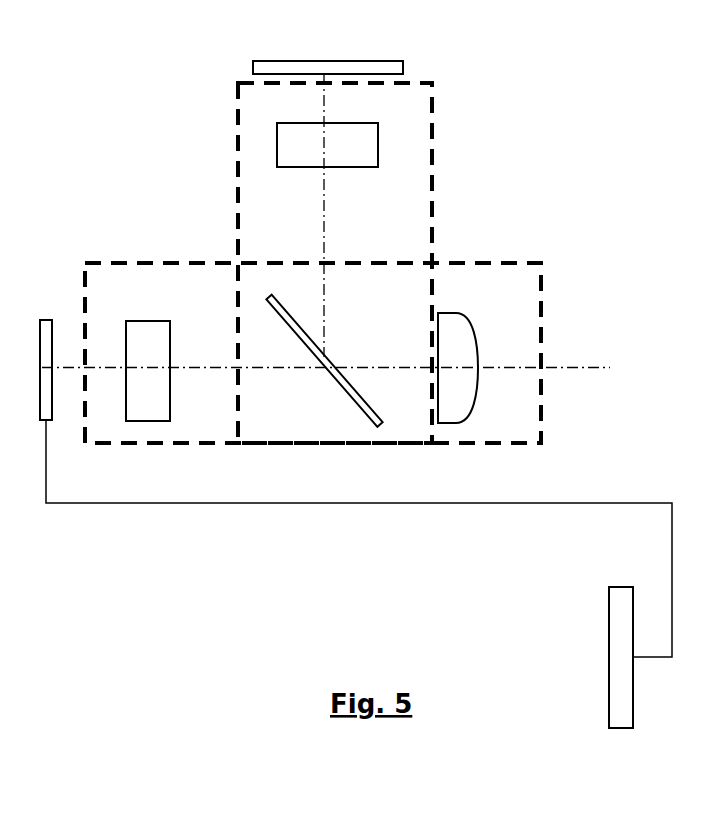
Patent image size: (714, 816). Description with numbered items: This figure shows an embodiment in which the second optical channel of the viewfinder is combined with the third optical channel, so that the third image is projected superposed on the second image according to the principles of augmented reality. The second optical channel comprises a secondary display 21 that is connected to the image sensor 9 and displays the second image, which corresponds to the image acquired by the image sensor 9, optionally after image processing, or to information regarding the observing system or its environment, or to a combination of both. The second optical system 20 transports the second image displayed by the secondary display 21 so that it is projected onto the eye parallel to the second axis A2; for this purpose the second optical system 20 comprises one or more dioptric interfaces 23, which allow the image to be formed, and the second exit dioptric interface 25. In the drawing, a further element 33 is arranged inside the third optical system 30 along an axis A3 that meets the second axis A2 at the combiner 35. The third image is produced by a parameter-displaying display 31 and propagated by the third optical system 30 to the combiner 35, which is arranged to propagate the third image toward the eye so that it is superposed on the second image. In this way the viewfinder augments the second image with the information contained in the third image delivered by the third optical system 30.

The image sensor 9 is at (622, 634).
The second optical system 20 is at (111, 257).
The secondary display 21 is at (41, 317).
The dioptric interfaces 23 is at (145, 345).
The second exit dioptric interface 25 is at (452, 324).
The third optical system 30 is at (229, 120).
The parameter-displaying display 31 is at (320, 59).
The optical element 33 is at (291, 133).
The combiner 35 is at (322, 376).
The second axis A2 is at (215, 359).
The illumination axis A3 is at (325, 220).